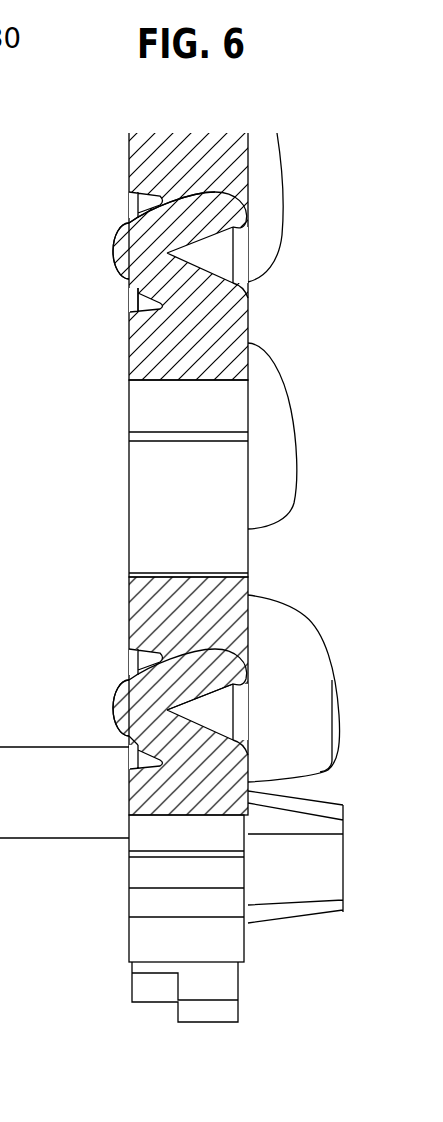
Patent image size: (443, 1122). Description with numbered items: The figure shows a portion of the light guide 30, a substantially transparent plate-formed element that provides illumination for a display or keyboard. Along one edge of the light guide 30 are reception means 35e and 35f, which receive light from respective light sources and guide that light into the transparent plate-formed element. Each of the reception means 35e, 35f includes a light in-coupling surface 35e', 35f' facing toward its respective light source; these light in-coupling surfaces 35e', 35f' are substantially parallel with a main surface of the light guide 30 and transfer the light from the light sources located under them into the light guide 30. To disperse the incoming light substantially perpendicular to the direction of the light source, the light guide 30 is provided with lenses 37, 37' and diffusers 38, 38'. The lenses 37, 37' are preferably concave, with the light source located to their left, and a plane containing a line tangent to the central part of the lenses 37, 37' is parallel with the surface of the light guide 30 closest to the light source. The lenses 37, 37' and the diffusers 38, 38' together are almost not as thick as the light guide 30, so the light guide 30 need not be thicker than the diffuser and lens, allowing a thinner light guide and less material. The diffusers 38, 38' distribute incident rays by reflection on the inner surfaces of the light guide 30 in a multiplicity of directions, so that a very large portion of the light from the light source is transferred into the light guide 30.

The light guide 30 is at (203, 115).
The reception means 35e is at (293, 423).
The reception means 35f is at (294, 673).
The light in-coupling surface 35e' is at (85, 239).
The light in-coupling surface 35f' is at (81, 672).
The lens 37 is at (86, 725).
The lens 37' is at (93, 300).
The diffuser 38 is at (134, 690).
The diffuser 38' is at (140, 184).